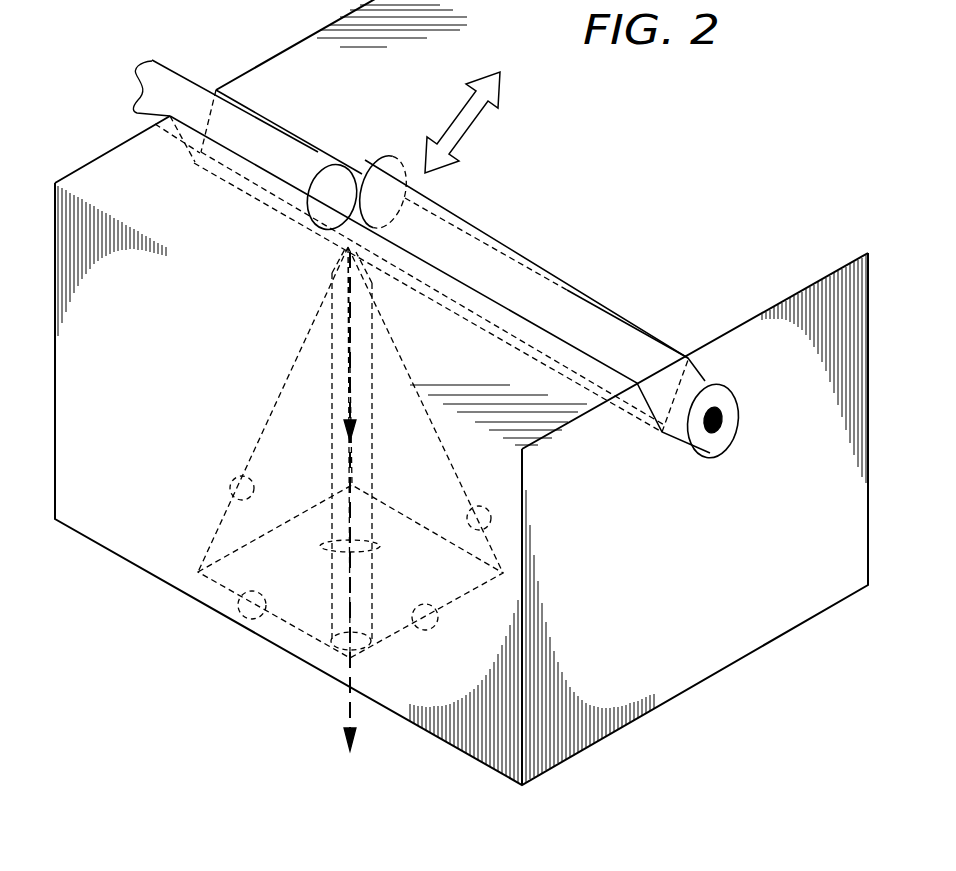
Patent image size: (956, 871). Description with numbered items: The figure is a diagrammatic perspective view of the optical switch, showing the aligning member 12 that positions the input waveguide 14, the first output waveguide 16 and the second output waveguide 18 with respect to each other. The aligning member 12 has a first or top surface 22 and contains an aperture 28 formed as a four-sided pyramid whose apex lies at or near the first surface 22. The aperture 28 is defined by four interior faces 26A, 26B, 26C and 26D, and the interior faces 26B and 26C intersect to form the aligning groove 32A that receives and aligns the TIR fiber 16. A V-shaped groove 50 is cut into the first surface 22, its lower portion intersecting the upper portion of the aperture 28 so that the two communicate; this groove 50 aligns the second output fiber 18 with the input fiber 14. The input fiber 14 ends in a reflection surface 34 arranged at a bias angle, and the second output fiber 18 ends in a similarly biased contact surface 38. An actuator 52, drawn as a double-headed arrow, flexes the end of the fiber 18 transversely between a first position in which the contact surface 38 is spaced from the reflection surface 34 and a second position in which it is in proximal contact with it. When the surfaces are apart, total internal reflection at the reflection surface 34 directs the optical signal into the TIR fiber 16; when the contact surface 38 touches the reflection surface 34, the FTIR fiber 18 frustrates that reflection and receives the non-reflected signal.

The aligning member 12 is at (713, 674).
The input waveguide 14 is at (279, 144).
The first output waveguide 16 is at (333, 466).
The second output waveguide 18 is at (480, 230).
The first surface 22 is at (747, 185).
The interior face 26A is at (231, 498).
The interior face 26B is at (436, 624).
The interior face 26C is at (243, 612).
The interior face 26D is at (487, 513).
The aperture 28 is at (272, 411).
The aligning groove 32A is at (381, 546).
The reflection surface 34 is at (336, 176).
The contact surface 38 is at (358, 163).
The V-shaped groove 50 is at (667, 341).
The actuator 52 is at (460, 107).